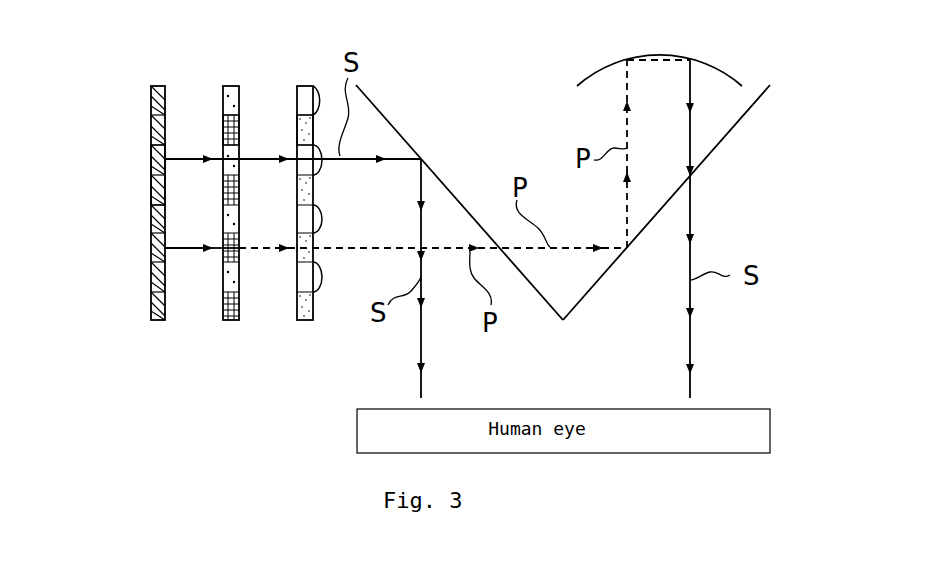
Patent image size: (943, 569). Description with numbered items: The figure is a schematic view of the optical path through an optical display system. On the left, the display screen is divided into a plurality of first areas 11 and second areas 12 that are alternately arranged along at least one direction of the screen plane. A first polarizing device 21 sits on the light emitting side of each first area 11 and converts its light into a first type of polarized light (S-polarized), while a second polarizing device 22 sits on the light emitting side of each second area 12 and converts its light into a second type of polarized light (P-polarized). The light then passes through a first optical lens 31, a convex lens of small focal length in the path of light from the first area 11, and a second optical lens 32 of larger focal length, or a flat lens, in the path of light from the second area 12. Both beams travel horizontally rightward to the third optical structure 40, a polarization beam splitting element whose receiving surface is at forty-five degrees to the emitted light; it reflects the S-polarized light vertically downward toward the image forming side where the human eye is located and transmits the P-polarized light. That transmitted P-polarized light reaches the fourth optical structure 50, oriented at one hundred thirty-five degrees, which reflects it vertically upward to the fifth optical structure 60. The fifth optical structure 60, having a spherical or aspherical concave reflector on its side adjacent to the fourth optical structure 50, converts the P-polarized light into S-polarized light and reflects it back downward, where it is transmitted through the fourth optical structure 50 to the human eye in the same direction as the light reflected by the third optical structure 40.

The first area 11 is at (151, 96).
The second area 12 is at (151, 134).
The first polarizing device 21 is at (229, 88).
The second polarizing device 22 is at (226, 130).
The first optical lens 31 is at (304, 88).
The second optical lens 32 is at (300, 130).
The third optical structure 40 is at (392, 120).
The fourth optical structure 50 is at (725, 150).
The fifth optical structure 60 is at (598, 70).